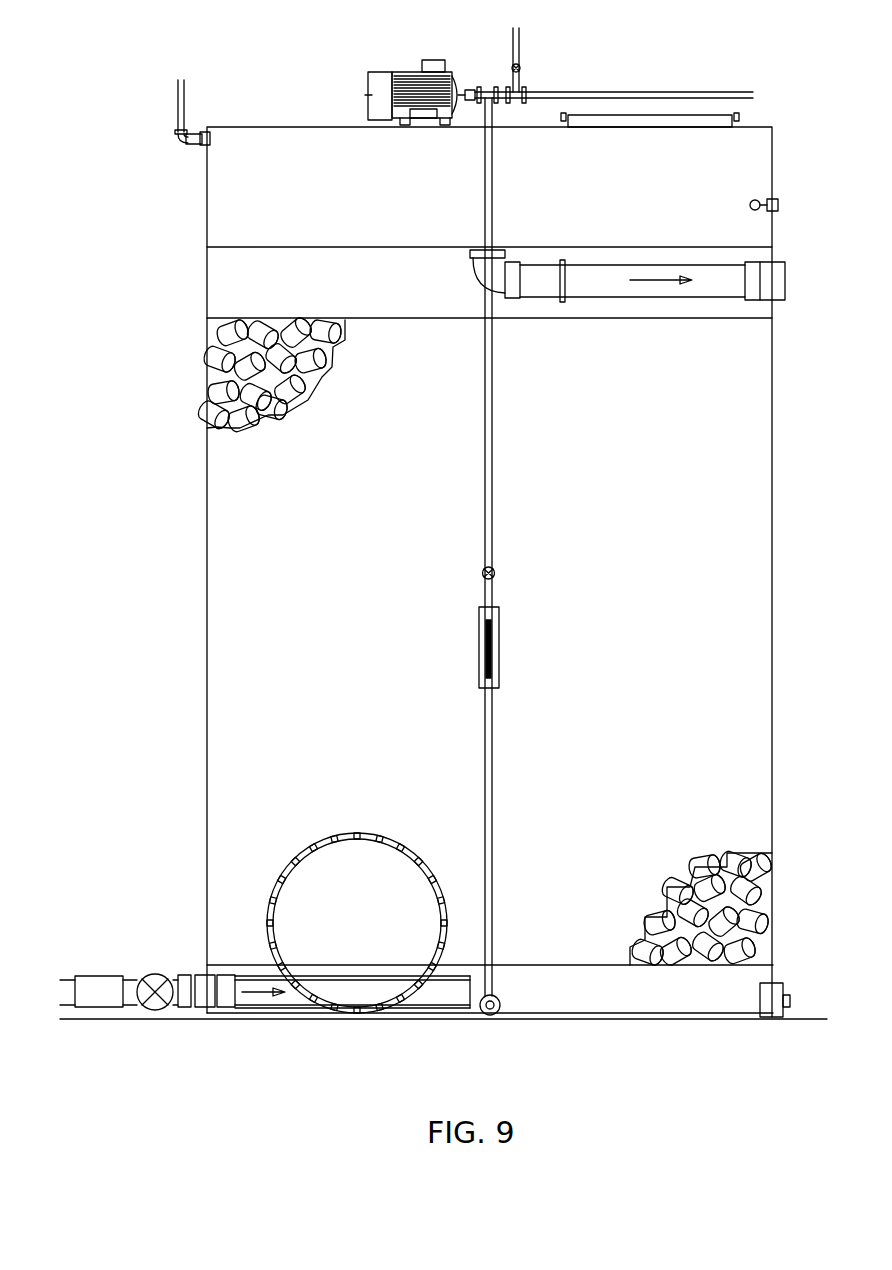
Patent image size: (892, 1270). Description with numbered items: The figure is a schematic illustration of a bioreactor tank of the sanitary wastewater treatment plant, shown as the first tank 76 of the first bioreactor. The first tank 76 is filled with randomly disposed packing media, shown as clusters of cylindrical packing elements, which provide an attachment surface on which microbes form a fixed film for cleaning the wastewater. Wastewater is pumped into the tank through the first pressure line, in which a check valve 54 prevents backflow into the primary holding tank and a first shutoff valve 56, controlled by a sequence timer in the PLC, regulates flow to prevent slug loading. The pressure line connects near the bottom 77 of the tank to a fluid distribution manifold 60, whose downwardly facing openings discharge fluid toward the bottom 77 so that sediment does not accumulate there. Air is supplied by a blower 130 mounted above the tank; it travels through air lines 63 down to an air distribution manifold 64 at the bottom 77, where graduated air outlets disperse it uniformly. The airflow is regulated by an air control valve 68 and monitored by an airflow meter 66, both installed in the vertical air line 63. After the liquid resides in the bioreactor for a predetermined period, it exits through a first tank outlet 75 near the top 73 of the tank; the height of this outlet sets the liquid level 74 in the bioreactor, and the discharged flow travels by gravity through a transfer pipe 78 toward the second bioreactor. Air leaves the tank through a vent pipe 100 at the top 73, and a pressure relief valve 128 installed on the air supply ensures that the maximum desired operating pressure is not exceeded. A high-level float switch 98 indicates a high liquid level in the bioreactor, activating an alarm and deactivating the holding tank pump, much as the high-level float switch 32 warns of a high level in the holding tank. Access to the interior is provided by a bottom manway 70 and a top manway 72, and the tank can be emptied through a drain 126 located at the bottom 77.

The high-level float switch 32 is at (205, 368).
The check valve 54 is at (95, 1008).
The first shutoff valve 56 is at (155, 1010).
The fluid distribution manifold 60 is at (445, 1000).
The air line 63 is at (700, 92).
The air distribution manifold 64 is at (492, 1016).
The airflow meter 66 is at (478, 645).
The air control valve 68 is at (483, 573).
The bottom manway 70 is at (348, 1013).
The top manway 72 is at (600, 115).
The top 73 is at (343, 194).
The liquid level 74 is at (295, 247).
The first tank outlet 75 is at (478, 250).
The first tank 76 is at (773, 462).
The bottom 77 is at (530, 947).
The transfer pipe 78 is at (625, 265).
The high-level float switch 98 is at (749, 205).
The vent pipe 100 is at (200, 145).
The drain 126 is at (776, 1017).
The pressure relief valve 128 is at (512, 67).
The blower 130 is at (415, 72).